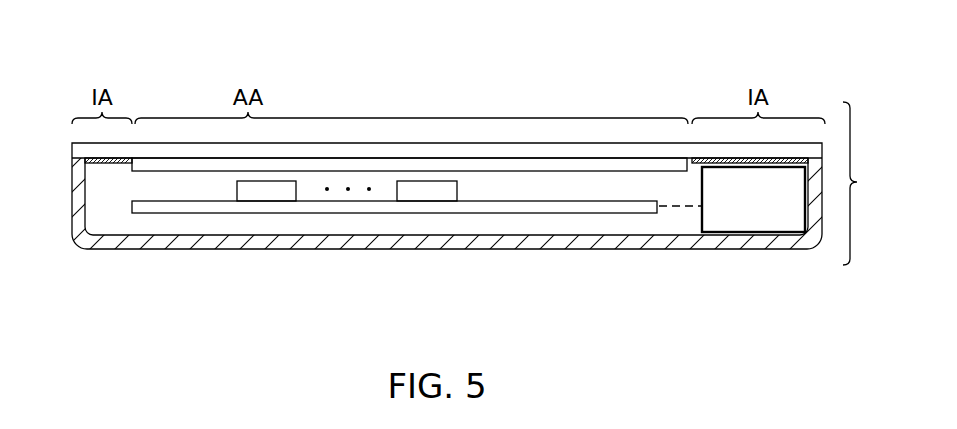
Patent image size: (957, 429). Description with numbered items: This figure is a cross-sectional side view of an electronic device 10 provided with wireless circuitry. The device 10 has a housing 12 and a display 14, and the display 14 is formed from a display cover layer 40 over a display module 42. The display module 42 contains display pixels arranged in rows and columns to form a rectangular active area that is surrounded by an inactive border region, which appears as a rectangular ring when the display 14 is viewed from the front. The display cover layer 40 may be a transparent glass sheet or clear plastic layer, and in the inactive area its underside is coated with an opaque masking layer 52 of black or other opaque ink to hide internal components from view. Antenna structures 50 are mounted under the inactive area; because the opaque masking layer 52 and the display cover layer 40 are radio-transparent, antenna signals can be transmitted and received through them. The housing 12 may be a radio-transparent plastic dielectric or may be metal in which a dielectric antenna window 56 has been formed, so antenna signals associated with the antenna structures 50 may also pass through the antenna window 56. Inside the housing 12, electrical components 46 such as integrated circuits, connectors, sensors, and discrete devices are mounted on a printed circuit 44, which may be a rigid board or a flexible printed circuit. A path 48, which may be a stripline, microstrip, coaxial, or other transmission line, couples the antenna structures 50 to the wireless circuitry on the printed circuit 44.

The electronic device 10 is at (867, 183).
The housing 12 is at (78, 237).
The display 14 is at (447, 123).
The display cover layer 40 is at (493, 152).
The display module 42 is at (573, 165).
The printed circuit 44 is at (345, 206).
The electrical components 46 is at (268, 192).
The path 48 is at (673, 207).
The antenna structures 50 is at (752, 203).
The opaque masking layer 52 is at (101, 164).
The antenna window 56 is at (783, 250).